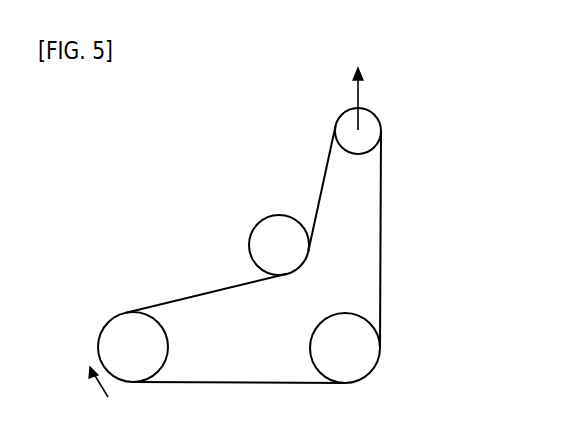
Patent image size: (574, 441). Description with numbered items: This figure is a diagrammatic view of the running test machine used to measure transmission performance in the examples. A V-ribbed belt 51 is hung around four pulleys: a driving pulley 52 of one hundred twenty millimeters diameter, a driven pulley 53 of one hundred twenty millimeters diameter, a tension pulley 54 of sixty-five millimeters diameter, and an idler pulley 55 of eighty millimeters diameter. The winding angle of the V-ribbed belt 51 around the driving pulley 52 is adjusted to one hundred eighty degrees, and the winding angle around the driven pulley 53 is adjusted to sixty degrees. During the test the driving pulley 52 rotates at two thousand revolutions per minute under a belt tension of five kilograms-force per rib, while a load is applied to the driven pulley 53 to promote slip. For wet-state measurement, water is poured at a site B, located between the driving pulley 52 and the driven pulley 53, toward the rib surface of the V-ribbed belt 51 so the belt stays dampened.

The V-ribbed belt 51 is at (195, 297).
The driving pulley 52 is at (125, 343).
The driven pulley 53 is at (353, 355).
The tension pulley 54 is at (367, 137).
The idler pulley 55 is at (265, 242).
The site B is at (213, 384).